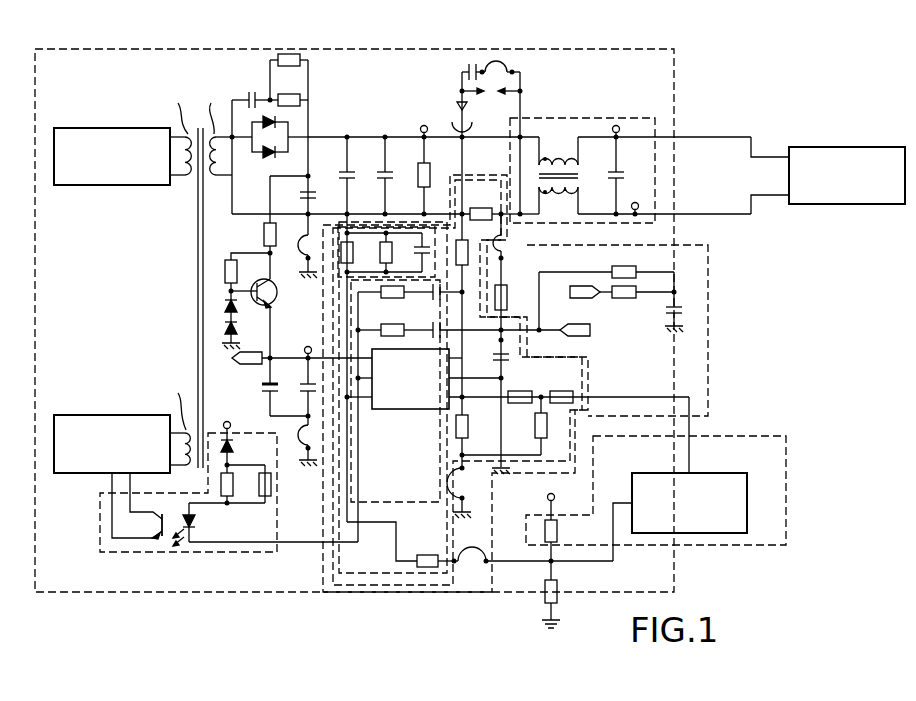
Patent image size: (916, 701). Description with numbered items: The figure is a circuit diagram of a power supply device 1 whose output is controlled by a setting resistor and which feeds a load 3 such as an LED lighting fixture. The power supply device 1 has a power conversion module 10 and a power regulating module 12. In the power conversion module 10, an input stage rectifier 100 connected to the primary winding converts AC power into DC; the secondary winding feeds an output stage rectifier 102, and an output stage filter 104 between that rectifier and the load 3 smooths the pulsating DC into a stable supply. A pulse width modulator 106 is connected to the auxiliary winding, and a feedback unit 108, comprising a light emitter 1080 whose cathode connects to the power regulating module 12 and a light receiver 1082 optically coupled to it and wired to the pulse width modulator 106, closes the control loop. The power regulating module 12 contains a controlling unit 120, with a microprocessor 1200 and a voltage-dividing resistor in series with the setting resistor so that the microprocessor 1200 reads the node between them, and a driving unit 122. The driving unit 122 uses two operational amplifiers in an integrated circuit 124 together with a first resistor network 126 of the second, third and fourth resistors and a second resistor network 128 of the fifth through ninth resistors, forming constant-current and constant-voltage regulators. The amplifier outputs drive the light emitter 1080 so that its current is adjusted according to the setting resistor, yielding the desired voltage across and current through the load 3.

The power supply device 1 is at (500, 13).
The power conversion module 10 is at (106, 42).
The input stage rectifier 100 is at (112, 130).
The output stage rectifier 102 is at (292, 126).
The output stage filter 104 is at (590, 108).
The pulse width modulator 106 is at (112, 416).
The feedback unit 108 is at (118, 550).
The light emitter 1080 is at (196, 528).
The light receiver 1082 is at (163, 538).
The power regulating module 12 is at (522, 623).
The controlling unit 120 is at (507, 562).
The driving unit 122 is at (420, 592).
The integrated circuit 124 is at (407, 411).
The first resistor network 126 is at (403, 502).
The second resistor network 128 is at (592, 362).
The microprocessor 1200 is at (712, 472).
The load 3 is at (849, 150).